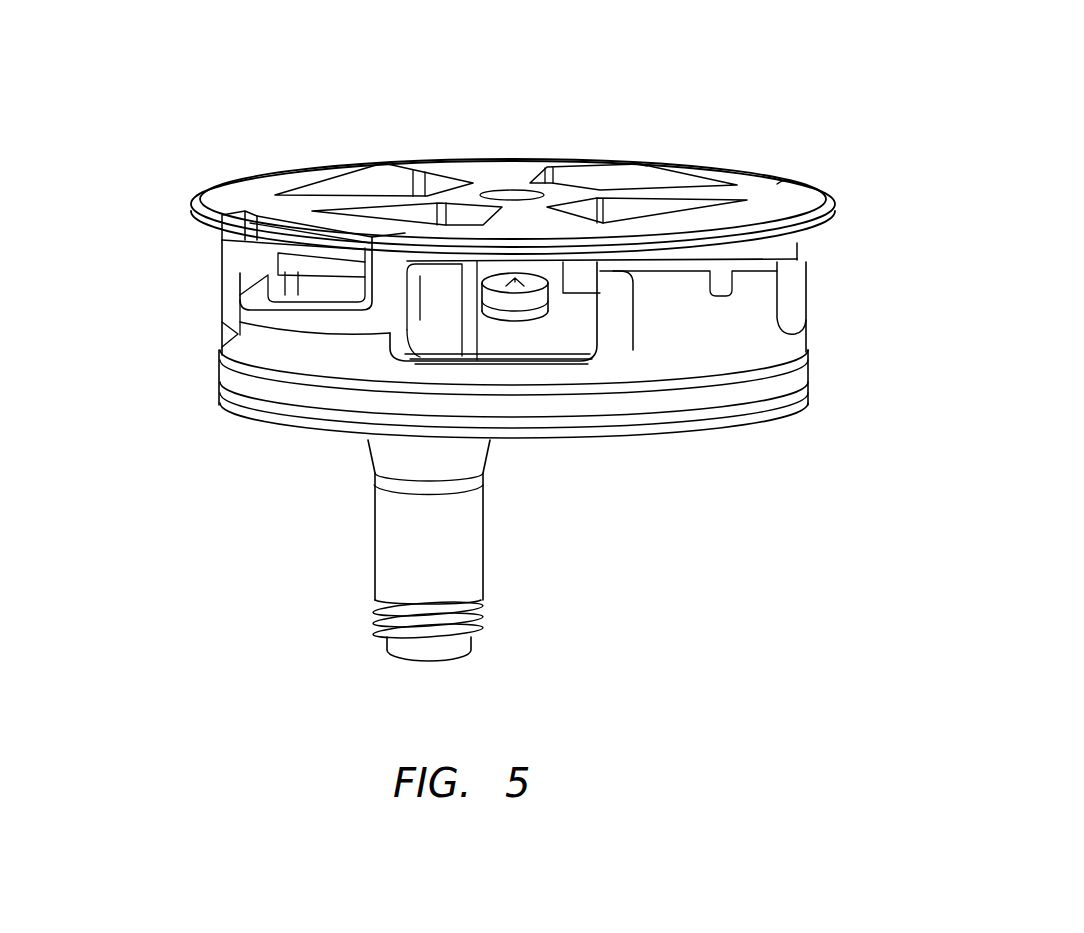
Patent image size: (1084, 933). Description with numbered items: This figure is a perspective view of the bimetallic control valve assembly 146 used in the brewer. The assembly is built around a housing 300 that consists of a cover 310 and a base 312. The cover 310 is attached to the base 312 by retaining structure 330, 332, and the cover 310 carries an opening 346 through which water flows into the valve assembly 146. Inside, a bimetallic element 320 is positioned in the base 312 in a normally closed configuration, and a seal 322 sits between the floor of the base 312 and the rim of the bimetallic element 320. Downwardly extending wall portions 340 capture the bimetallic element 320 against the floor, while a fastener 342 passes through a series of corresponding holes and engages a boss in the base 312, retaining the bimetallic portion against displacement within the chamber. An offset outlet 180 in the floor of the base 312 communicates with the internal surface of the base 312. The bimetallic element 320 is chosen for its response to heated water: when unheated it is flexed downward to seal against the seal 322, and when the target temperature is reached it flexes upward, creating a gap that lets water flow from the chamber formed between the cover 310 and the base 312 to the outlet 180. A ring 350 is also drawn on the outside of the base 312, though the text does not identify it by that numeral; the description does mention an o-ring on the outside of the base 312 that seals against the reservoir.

The control valve assembly 146 is at (795, 85).
The housing 300 is at (128, 208).
The cover 310 is at (233, 183).
The base 312 is at (215, 341).
The bimetallic element 320 is at (530, 341).
The seal 322 is at (487, 356).
The retaining structure 330 is at (245, 308).
The retaining structure 332 is at (257, 272).
The downwardly extending wall portions 340 is at (442, 333).
The fastener 342 is at (547, 293).
The opening 346 is at (383, 185).
The sealing ring 350 is at (222, 378).
The offset outlet 180 is at (385, 540).